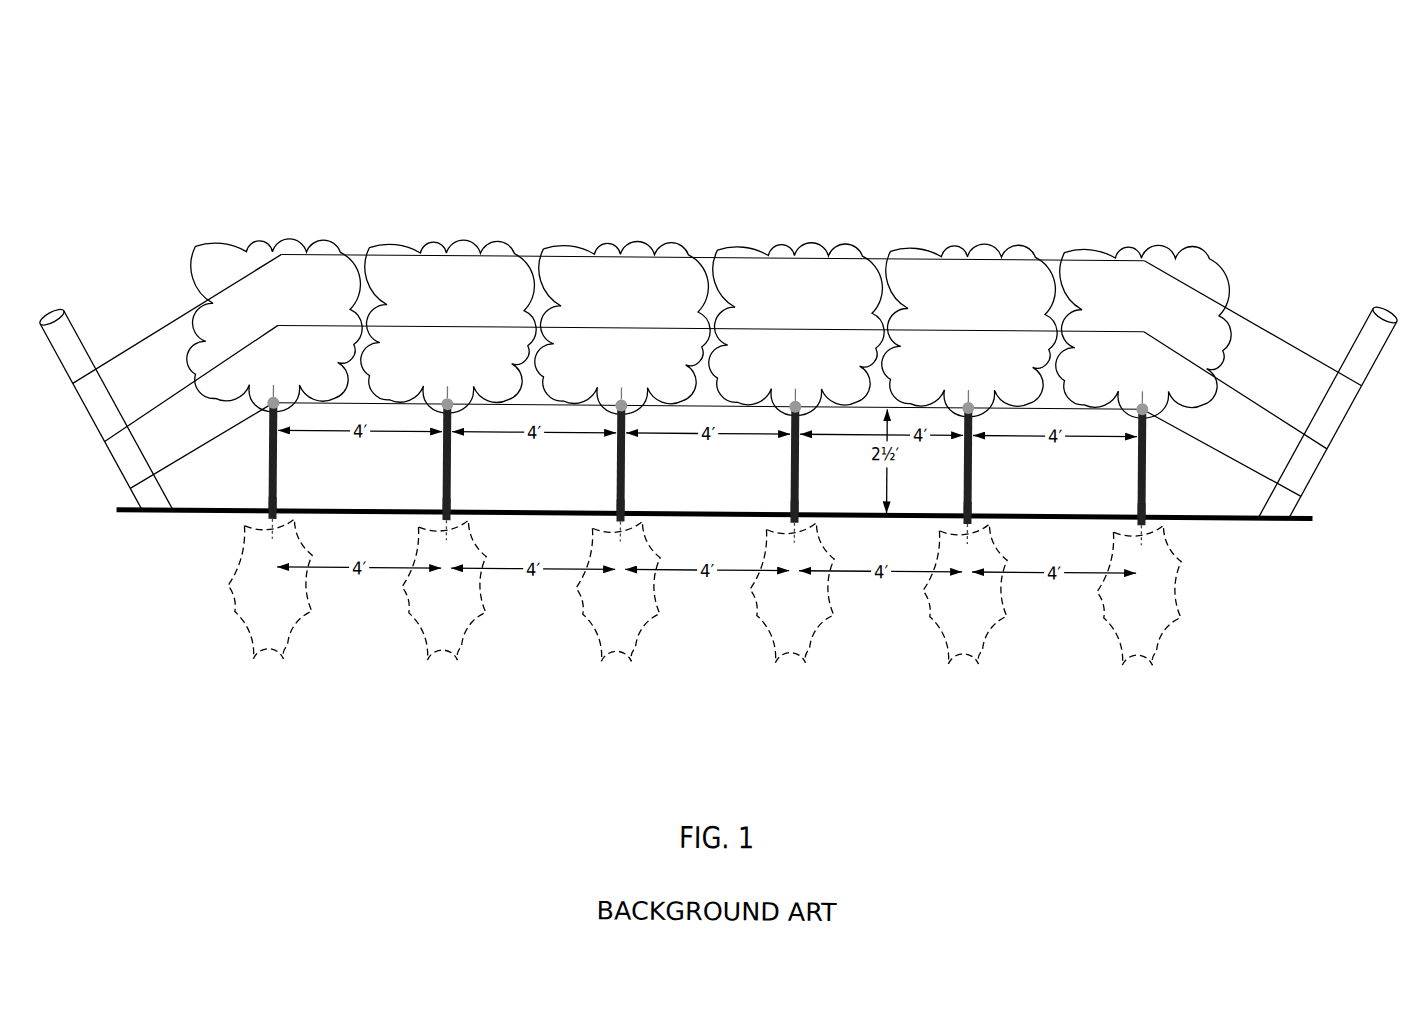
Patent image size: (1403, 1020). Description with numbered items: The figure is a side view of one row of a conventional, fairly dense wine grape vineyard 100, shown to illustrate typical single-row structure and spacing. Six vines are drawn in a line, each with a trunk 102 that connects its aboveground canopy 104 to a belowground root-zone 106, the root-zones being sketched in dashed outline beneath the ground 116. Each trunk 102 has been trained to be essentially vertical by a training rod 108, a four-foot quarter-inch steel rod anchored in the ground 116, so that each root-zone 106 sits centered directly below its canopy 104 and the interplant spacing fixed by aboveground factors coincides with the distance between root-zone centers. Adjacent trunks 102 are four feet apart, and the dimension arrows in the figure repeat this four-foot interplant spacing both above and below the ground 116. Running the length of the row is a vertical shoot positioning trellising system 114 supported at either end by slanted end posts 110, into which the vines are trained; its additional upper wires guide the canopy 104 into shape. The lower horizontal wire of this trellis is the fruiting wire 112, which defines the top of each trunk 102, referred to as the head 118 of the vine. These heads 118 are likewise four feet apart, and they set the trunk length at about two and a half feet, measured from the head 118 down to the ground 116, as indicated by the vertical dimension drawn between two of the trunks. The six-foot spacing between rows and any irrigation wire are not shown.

The wine grape vineyard 100 is at (747, 97).
The vine trunk 102 is at (279, 466).
The canopy 104 is at (1138, 235).
The root-zone 106 is at (310, 660).
The training rod 108 is at (267, 492).
The end post 110 is at (1356, 307).
The fruiting wire 112 is at (227, 434).
The vertical shoot positioning (VSP) trellising system 114 is at (175, 394).
The ground 116 is at (1217, 526).
The head 118 is at (283, 396).